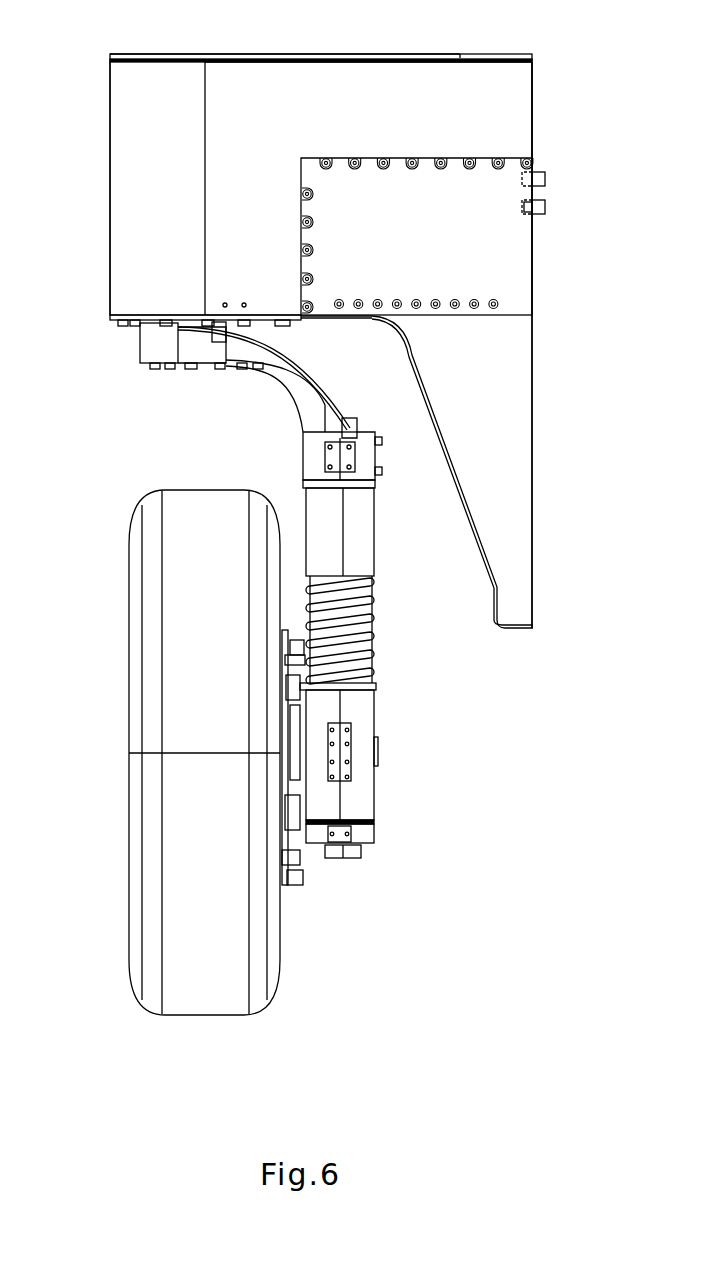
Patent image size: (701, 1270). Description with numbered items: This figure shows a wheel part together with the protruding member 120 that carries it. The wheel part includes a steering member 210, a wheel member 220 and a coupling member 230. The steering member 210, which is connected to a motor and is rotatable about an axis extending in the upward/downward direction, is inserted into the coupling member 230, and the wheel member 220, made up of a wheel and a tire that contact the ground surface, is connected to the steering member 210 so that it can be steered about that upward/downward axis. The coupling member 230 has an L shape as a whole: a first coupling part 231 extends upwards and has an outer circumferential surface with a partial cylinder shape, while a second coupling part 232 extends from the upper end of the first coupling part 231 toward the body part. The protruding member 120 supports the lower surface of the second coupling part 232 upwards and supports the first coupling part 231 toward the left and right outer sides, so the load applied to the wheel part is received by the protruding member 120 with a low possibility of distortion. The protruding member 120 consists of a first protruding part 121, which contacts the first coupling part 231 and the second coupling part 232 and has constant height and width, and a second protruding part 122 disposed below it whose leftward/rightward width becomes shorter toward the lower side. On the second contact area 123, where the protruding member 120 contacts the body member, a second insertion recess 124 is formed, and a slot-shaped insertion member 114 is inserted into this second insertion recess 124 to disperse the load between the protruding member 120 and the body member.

The insertion member 114 is at (545, 209).
The protruding member 120 is at (463, 345).
The first protruding part 121 is at (465, 268).
The second protruding part 122 is at (517, 431).
The second contact area 123 is at (533, 263).
The second insertion recess 124 is at (530, 210).
The steering member 210 is at (190, 347).
The wheel member 220 is at (128, 648).
The coupling member 230 is at (124, 127).
The first coupling part 231 is at (135, 185).
The second coupling part 232 is at (419, 98).